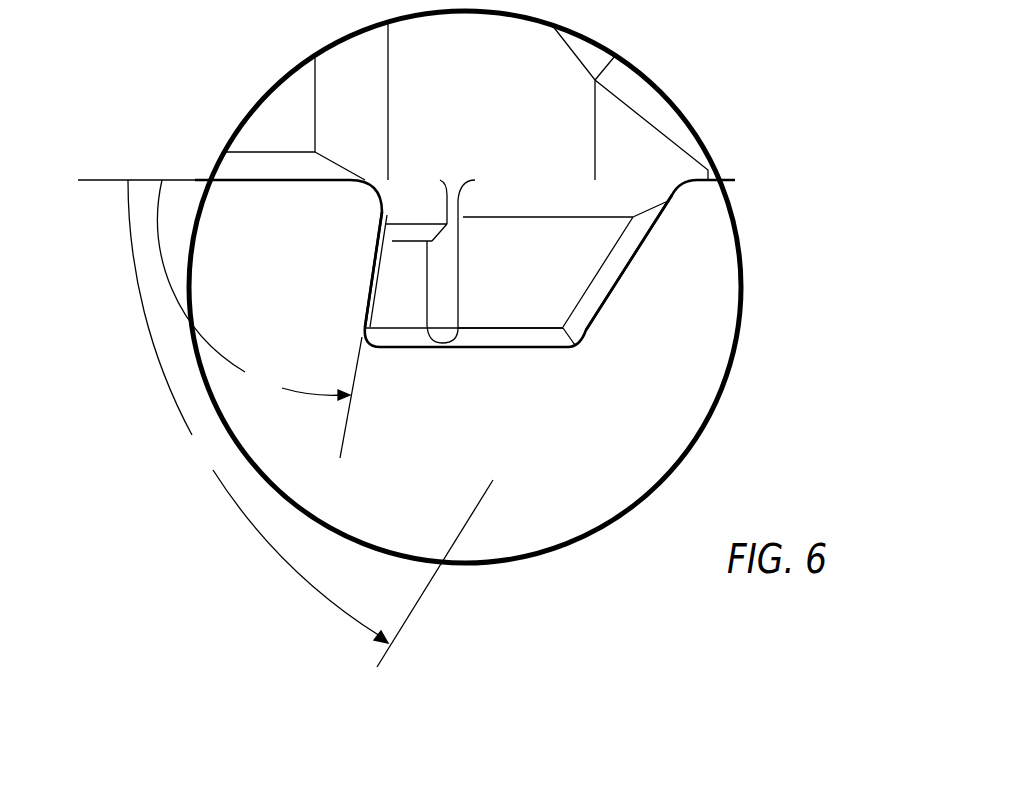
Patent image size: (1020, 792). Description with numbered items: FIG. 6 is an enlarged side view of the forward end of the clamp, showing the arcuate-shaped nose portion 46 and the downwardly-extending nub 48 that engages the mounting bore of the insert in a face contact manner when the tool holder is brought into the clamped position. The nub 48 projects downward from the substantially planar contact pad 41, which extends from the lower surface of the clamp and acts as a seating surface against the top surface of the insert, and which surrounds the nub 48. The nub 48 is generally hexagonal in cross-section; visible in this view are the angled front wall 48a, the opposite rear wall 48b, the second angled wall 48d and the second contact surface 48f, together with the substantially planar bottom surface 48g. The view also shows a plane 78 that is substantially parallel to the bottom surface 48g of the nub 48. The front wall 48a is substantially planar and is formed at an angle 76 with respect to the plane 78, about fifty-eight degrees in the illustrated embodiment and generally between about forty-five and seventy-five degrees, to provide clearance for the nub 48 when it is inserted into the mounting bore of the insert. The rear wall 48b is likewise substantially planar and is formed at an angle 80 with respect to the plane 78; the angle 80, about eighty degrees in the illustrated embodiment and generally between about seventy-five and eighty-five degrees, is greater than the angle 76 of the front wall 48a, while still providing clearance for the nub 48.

The nose portion 46 is at (674, 82).
The plane 78 is at (112, 180).
The contact pad 41 is at (252, 183).
The nub 48 is at (627, 302).
The front wall 48a is at (618, 258).
The rear wall 48b is at (367, 295).
The second angled wall 48d is at (507, 273).
The second contact surface 48f is at (401, 303).
The bottom surface 48g is at (453, 345).
The angle 76 is at (310, 423).
The angle 80 is at (260, 319).